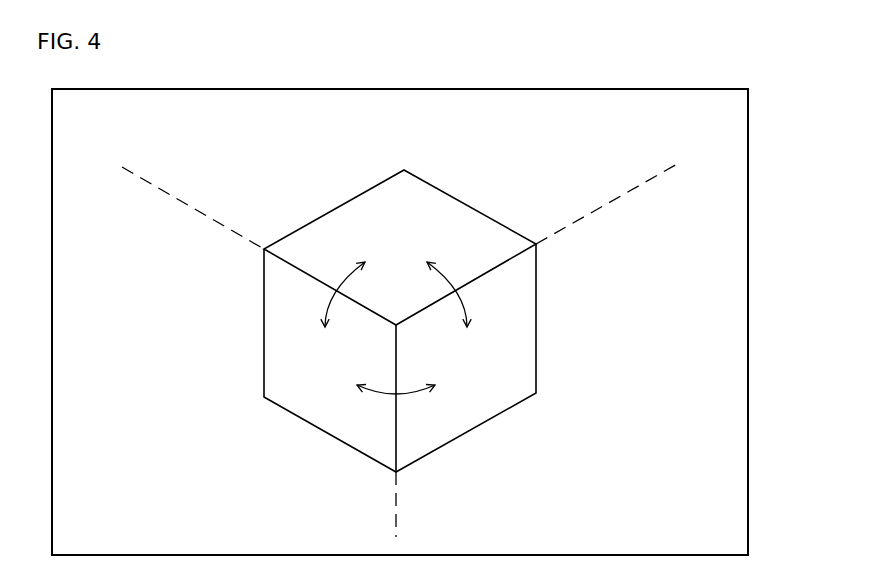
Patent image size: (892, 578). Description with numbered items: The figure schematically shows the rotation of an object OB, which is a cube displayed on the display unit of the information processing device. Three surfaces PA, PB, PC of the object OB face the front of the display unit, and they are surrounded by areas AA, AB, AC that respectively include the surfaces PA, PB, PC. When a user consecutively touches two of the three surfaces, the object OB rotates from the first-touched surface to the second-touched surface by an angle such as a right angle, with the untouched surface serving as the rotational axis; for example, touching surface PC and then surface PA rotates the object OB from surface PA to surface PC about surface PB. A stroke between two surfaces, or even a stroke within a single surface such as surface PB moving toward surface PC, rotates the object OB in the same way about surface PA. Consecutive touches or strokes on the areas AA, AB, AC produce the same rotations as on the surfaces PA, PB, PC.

The object OB is at (448, 192).
The area AA is at (400, 182).
The area AB is at (275, 480).
The area AC is at (537, 350).
The surface PA is at (396, 278).
The surface PB is at (366, 366).
The surface PC is at (422, 366).